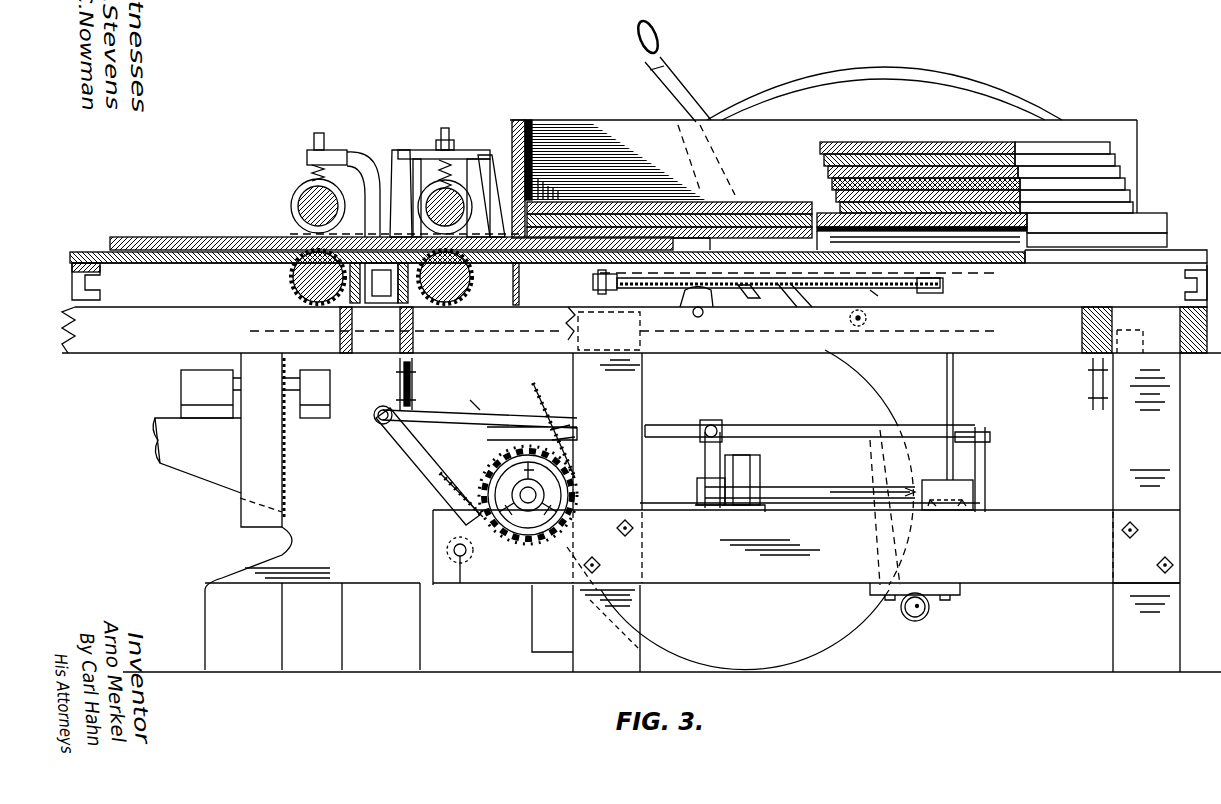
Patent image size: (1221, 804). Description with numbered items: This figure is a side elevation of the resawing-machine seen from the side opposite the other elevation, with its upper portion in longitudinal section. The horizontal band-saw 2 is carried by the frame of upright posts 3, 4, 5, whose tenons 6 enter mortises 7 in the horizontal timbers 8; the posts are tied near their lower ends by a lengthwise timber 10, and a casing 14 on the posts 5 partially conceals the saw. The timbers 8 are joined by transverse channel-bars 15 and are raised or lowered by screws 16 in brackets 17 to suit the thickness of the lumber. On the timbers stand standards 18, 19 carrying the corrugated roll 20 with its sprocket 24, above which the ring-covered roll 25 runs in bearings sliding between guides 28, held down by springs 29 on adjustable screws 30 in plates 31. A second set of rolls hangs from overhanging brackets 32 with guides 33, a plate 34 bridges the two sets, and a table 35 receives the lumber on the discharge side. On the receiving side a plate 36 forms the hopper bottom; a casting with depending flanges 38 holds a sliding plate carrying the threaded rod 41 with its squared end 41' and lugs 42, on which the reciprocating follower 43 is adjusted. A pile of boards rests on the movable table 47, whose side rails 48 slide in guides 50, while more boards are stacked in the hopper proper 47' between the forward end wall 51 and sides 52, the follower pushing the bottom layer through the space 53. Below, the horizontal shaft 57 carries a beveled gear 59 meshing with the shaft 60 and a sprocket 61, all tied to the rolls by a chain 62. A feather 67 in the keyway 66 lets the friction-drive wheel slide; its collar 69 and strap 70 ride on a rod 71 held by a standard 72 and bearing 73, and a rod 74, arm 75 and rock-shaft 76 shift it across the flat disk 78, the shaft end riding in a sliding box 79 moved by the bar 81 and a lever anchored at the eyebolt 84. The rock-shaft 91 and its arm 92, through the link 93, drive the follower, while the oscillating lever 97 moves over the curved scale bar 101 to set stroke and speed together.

The horizontal band-saw 2 is at (255, 440).
The upright post 3 is at (1146, 512).
The upright post 4 is at (585, 466).
The upright post 5 is at (385, 378).
The tenon 6 is at (656, 358).
The mortise 7 is at (342, 312).
The horizontal timber 8 is at (158, 353).
The timber 10 is at (1052, 585).
The casing 14 is at (672, 545).
The transverse channel-bar 15 is at (92, 294).
The screw 16 is at (410, 396).
The bracket 17 is at (416, 384).
The standard 18 is at (472, 205).
The standard 19 is at (398, 185).
The corrugated roll 20 is at (452, 306).
The sprocket 24 is at (556, 164).
The roll 25 is at (566, 175).
The guide 28 is at (452, 205).
The spring 29 is at (450, 162).
The adjustable screw 30 is at (450, 131).
The plate 31 is at (424, 150).
The overhanging bracket 32 is at (349, 152).
The guide 33 is at (346, 160).
The plate 34 is at (381, 283).
The table 35 is at (86, 250).
The plate 36 is at (1180, 256).
The depending flange 38 is at (885, 299).
The threaded rod 41 is at (794, 307).
The squared end 41' is at (791, 282).
The lug 42 is at (694, 306).
The reciprocating follower 43 is at (736, 198).
The movable table 47 is at (998, 177).
The hopper proper 47' is at (916, 232).
The side rail 48 is at (1128, 203).
The guide 50 is at (1122, 245).
The forward end wall 51 is at (530, 122).
The hopper side 52 is at (1130, 146).
The space 53 is at (512, 230).
The horizontal shaft 57 is at (560, 495).
The beveled gear 59 is at (583, 452).
The shaft 60 is at (870, 486).
The sprocket 61 is at (521, 546).
The chain 62 is at (452, 478).
The keyway 66 is at (815, 486).
The feather 67 is at (765, 487).
The collar 69 is at (715, 510).
The strap 70 is at (704, 464).
The rod 71 is at (789, 428).
The standard 72 is at (985, 463).
The bearing 73 is at (678, 426).
The rod 74 is at (472, 413).
The arm 75 is at (400, 465).
The rock-shaft 76 is at (460, 570).
The flat-surfaced disk 78 is at (728, 608).
The sliding box 79 is at (975, 494).
The bar 81 is at (955, 407).
The eyebolt 84 is at (868, 322).
The rock-shaft 91 is at (930, 609).
The arm 92 is at (884, 380).
The link 93 is at (745, 291).
The oscillating operating-lever 97 is at (688, 102).
The curved bar 101 is at (1018, 101).